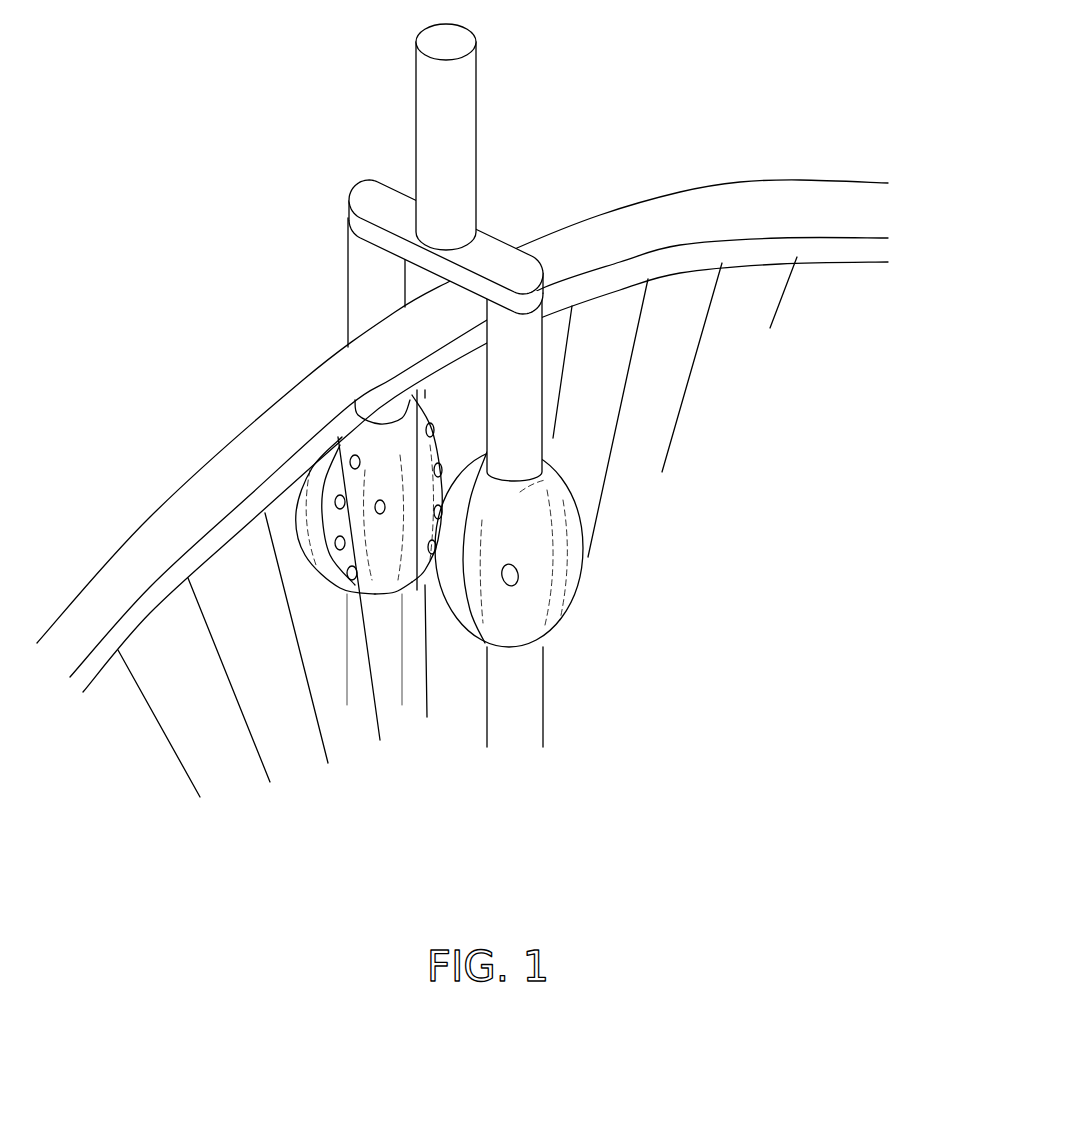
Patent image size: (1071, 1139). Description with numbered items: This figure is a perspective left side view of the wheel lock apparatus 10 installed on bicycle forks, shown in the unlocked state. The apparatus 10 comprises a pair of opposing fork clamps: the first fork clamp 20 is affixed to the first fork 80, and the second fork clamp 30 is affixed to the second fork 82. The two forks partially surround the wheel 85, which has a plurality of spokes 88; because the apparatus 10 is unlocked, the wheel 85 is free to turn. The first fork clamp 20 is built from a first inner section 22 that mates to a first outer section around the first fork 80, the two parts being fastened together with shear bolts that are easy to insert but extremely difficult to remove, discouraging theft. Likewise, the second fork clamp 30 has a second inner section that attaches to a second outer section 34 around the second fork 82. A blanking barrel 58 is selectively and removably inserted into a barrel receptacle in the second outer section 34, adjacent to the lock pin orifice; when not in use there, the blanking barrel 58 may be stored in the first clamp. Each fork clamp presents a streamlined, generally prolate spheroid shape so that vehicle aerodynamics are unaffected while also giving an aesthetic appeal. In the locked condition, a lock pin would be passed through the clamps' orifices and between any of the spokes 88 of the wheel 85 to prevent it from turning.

The wheel lock apparatus 10 is at (331, 612).
The first fork clamp 20 is at (262, 506).
The first inner section 22 is at (328, 478).
The second fork clamp 30 is at (610, 566).
The second outer section 34 is at (567, 602).
The blanking barrel 58 is at (512, 587).
The first fork 80 is at (363, 260).
The second fork 82 is at (535, 352).
The wheel 85 is at (637, 270).
The spokes 88 is at (737, 322).